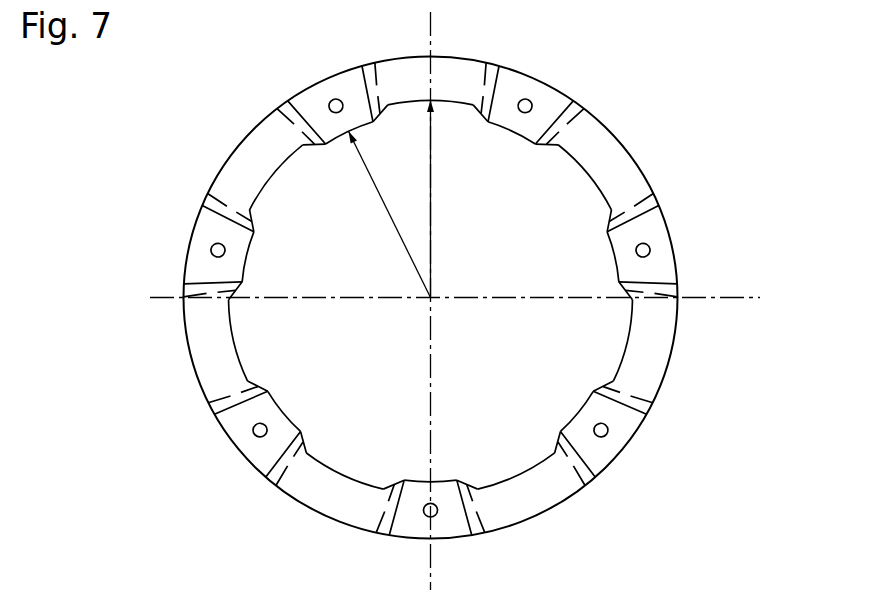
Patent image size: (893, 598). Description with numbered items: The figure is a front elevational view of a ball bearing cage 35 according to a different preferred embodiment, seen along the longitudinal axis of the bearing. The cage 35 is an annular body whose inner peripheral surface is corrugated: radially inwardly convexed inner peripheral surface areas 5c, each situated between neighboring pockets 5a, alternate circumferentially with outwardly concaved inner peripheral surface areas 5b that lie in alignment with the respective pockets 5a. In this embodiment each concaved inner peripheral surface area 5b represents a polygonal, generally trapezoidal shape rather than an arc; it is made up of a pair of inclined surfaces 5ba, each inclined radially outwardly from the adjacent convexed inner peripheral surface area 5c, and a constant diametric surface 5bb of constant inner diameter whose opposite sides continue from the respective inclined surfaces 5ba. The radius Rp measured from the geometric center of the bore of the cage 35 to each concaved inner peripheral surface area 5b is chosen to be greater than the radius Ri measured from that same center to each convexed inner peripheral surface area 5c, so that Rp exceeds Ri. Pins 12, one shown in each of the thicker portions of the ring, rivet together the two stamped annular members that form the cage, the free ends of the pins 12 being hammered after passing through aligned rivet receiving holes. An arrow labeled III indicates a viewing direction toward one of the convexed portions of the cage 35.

The cage 35 is at (612, 132).
The pocket 5a is at (248, 162).
The outwardly concaved inner peripheral surface area 5b is at (240, 360).
The inclined surface 5ba is at (475, 488).
The constant diametric surface 5bb is at (515, 480).
The radially inwardly convexed inner peripheral surface area 5c is at (612, 259).
The pin 12 is at (211, 252).
The radius to radially inwardly convexed inner peripheral surface area Ri is at (389, 214).
The radius to outwardly concaved inner peripheral surface area Rp is at (448, 199).
The view III direction arrow III is at (658, 264).